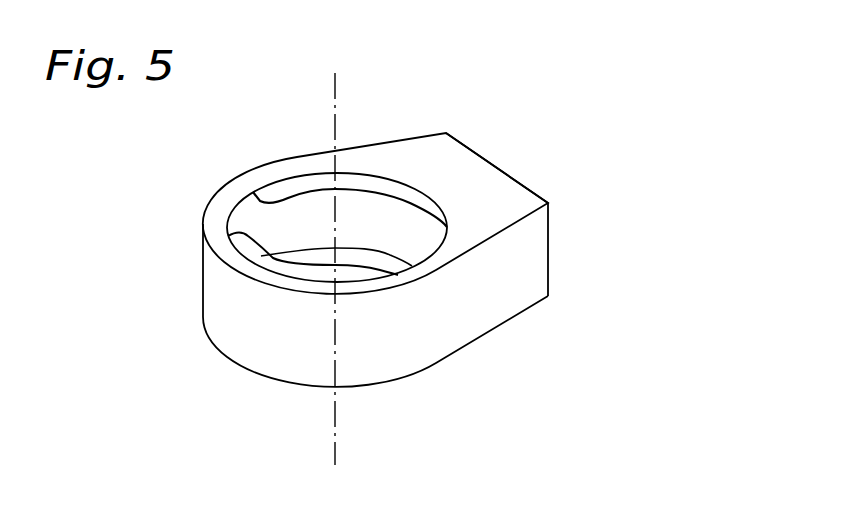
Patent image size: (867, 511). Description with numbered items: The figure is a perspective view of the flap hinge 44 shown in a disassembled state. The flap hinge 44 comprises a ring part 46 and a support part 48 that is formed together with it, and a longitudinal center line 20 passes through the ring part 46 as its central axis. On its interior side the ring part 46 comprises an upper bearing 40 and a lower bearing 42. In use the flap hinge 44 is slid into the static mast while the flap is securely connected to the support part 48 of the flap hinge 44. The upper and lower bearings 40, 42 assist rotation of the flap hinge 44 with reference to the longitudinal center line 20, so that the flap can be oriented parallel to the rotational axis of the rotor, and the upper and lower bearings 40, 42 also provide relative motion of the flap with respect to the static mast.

The longitudinal center line 20 is at (336, 82).
The upper bearing 40 is at (229, 205).
The lower bearing 42 is at (228, 238).
The flap hinge 44 is at (387, 121).
The ring part 46 is at (264, 337).
The support part 48 is at (470, 175).